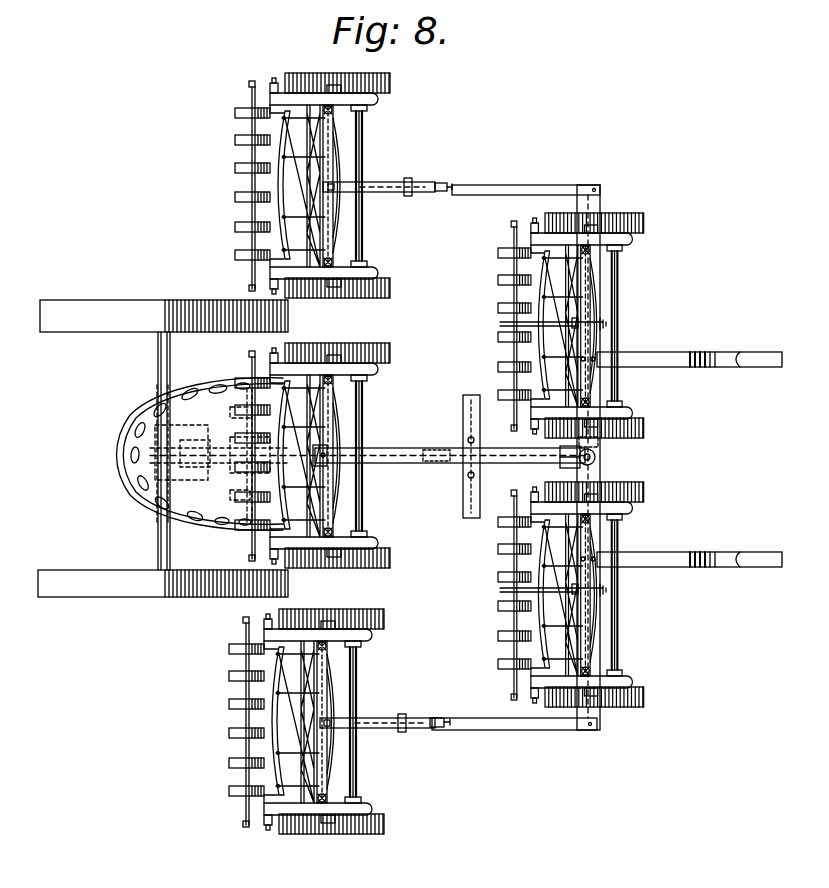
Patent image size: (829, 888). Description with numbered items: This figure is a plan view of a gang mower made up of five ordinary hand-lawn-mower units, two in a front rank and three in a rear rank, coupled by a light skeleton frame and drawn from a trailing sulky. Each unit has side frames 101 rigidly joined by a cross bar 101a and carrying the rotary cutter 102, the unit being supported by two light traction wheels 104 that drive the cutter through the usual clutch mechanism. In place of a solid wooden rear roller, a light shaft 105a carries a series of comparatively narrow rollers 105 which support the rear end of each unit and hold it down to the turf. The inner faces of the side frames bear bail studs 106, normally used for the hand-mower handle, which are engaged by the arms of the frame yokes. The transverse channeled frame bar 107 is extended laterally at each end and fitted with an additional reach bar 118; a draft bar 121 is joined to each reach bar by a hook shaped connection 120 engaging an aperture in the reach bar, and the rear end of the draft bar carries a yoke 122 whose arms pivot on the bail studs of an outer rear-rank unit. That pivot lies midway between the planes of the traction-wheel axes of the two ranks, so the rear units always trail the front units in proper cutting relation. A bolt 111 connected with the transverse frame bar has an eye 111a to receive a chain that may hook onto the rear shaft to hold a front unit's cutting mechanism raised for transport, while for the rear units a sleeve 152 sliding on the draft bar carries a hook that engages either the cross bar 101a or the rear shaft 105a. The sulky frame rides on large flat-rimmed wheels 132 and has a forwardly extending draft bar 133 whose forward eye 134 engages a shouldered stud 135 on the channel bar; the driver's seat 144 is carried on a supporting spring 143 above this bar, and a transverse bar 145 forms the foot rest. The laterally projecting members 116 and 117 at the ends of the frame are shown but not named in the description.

The side frame 101 is at (365, 100).
The cross bar 101a is at (372, 147).
The rotary cutter 102 is at (295, 182).
The traction wheel 104 is at (390, 82).
The roller 105 is at (245, 112).
The light shaft 105a is at (250, 240).
The bail stud 106 is at (345, 95).
The channeled frame bar 107 is at (590, 444).
The bolt 111 is at (606, 325).
The eye 111a is at (578, 323).
The shaft end 116 is at (770, 367).
The side shaft 117 is at (700, 355).
The reach bar 118 is at (540, 185).
The hook shaped connection 120 is at (450, 185).
The draft bar 121 is at (385, 190).
The yoke 122 is at (325, 790).
The wheel 132 is at (104, 300).
The draft bar 133 is at (418, 465).
The eye 134 is at (600, 463).
The shouldered stud 135 is at (572, 452).
The supporting spring 143 is at (325, 450).
The driver's seat 144 is at (120, 435).
The transverse bar 145 is at (470, 420).
The sleeve 152 is at (400, 195).